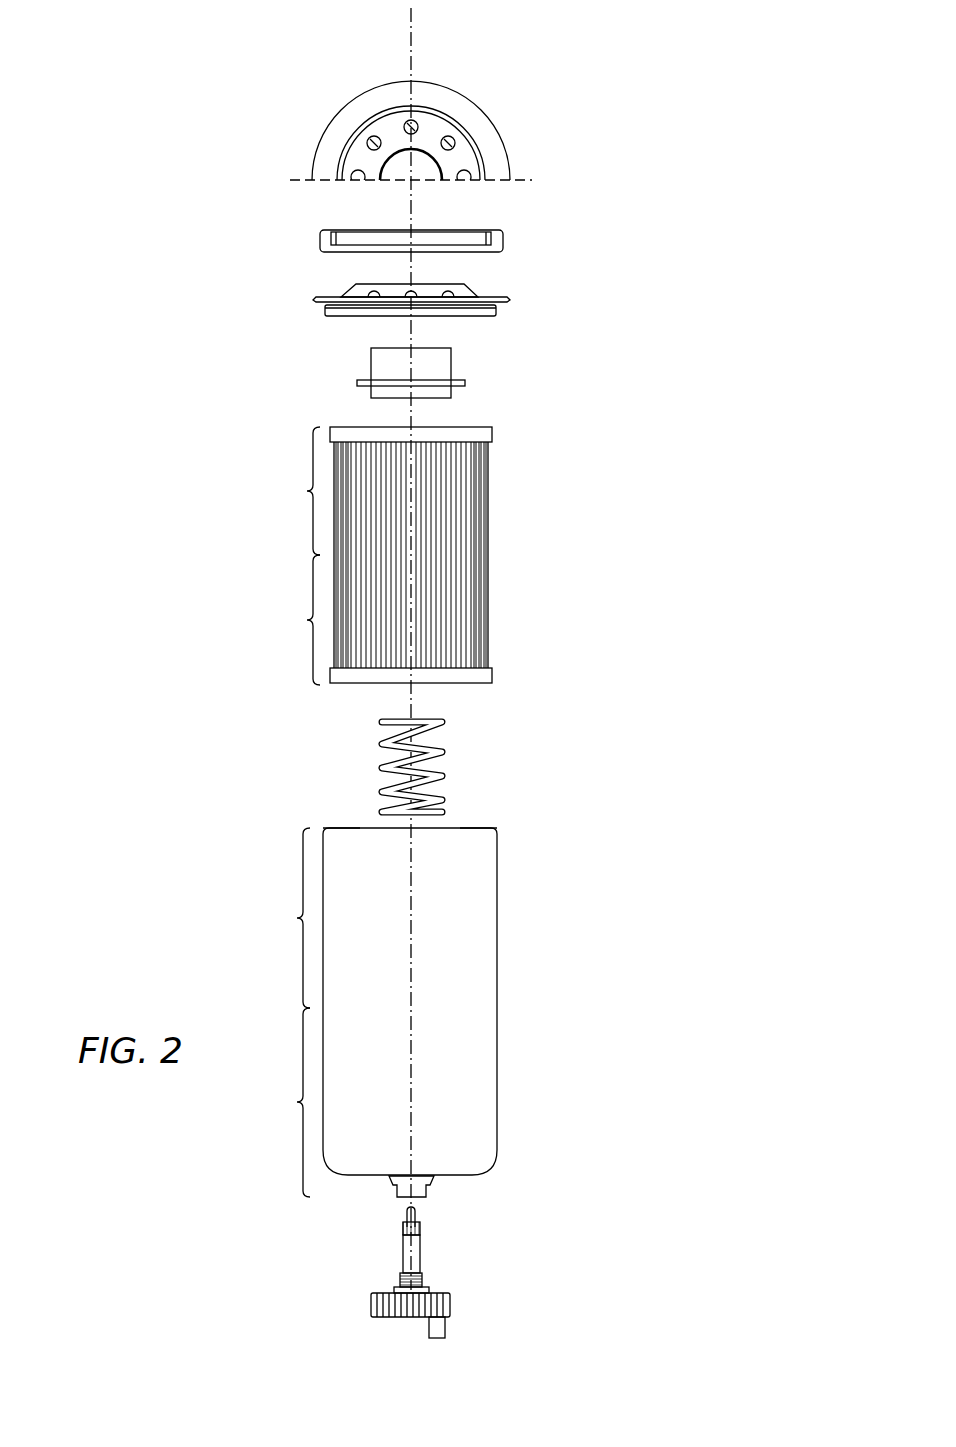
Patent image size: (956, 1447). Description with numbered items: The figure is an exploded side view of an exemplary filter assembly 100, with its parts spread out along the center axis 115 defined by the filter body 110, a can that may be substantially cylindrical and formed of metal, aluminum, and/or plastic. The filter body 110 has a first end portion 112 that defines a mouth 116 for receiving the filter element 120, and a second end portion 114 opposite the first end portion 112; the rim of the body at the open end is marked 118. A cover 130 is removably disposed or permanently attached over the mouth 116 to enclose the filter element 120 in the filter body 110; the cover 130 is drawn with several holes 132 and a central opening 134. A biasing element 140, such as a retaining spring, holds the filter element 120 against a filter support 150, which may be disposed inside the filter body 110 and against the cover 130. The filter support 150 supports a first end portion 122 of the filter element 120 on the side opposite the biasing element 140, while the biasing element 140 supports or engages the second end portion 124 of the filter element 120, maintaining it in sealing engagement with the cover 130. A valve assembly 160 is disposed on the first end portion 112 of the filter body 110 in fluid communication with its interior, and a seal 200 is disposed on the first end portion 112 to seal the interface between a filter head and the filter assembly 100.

The filter assembly 100 is at (72, 98).
The filter body 110 is at (500, 1013).
The first end portion 112 is at (286, 918).
The second end portion 114 is at (286, 1102).
The center axis 115 is at (413, 32).
The mouth 116 is at (342, 816).
The rim of housing 118 is at (512, 828).
The filter element 120 is at (492, 523).
The first end portion of the filter element 122 is at (293, 491).
The second end portion of the filter element 124 is at (293, 620).
The cover 130 is at (390, 135).
The holes 132 is at (456, 141).
The central opening 134 is at (378, 172).
The biasing element 140 is at (449, 750).
The filter support 150 is at (451, 352).
The valve assembly 160 is at (452, 1302).
The seal 200 is at (448, 88).